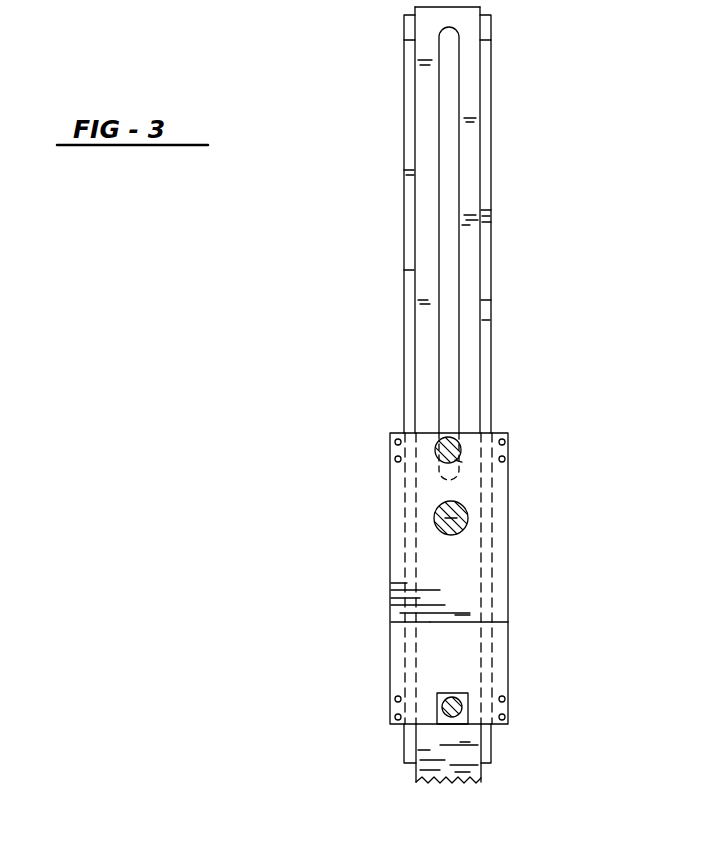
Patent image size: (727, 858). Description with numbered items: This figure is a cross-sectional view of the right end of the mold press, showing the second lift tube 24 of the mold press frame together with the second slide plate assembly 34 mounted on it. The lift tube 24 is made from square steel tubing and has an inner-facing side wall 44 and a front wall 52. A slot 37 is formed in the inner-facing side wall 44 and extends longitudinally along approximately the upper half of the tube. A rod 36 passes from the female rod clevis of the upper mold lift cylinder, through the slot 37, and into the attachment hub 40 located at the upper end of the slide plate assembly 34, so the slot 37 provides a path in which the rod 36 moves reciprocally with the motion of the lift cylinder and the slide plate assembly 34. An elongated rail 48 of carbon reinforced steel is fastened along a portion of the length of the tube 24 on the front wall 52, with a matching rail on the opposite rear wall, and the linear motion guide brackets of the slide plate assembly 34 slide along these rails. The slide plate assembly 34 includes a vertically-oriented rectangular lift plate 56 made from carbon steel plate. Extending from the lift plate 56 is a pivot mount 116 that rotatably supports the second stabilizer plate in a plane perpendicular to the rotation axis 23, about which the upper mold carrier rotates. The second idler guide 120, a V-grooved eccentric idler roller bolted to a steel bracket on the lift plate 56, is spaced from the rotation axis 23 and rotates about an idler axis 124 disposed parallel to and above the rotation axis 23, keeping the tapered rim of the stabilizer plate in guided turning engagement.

The rotation axis 23 is at (447, 703).
The second lift tube 24 is at (472, 90).
The second slide plate assembly 34 is at (386, 625).
The rod 36 is at (452, 440).
The slot 37 is at (453, 182).
The attachment hub 40 is at (458, 455).
The inner-facing side wall 44 is at (427, 188).
The elongated rail 48 is at (402, 60).
The front wall 52 is at (482, 203).
The lift plate 56 is at (390, 478).
The pivot mount 116 is at (452, 717).
The second idler guide 120 is at (448, 537).
The idler axis 124 is at (435, 522).